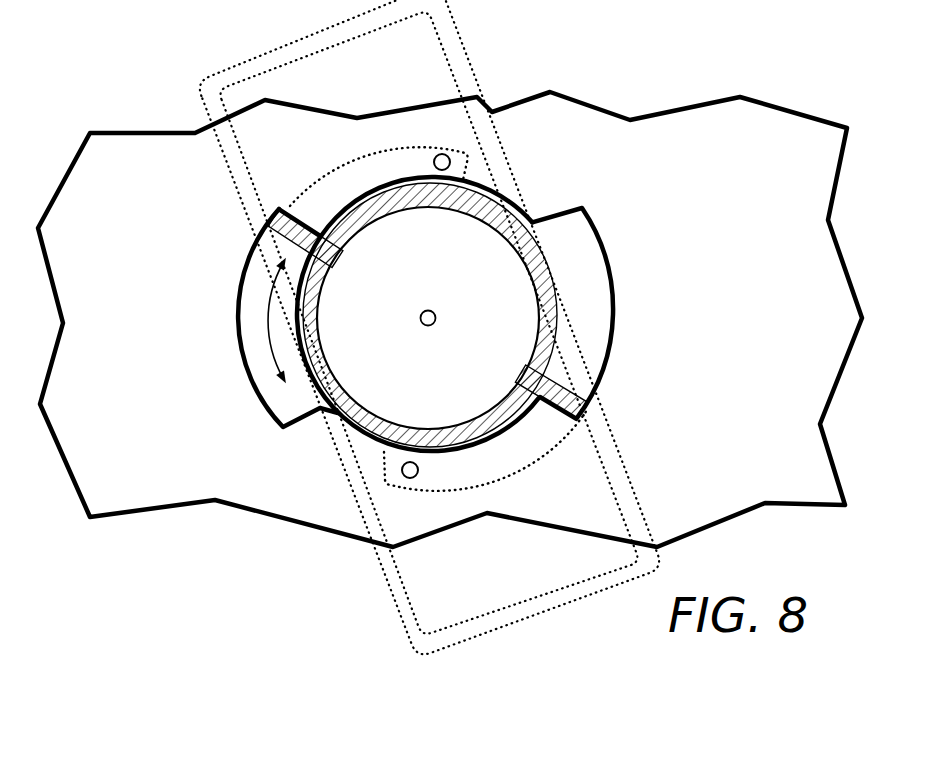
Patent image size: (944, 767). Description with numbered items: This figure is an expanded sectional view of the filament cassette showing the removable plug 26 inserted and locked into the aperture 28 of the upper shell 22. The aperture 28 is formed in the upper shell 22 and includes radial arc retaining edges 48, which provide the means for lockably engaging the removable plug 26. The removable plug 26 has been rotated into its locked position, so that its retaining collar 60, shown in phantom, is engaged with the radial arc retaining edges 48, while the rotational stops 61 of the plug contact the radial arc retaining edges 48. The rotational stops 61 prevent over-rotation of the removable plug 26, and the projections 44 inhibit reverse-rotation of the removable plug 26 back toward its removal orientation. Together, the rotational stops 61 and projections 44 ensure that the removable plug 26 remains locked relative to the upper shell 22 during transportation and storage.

The upper shell 22 is at (772, 133).
The aperture 28 is at (564, 226).
The removable plug 26 is at (310, 390).
The rotational stops 61 is at (318, 186).
The retaining collar 60 is at (342, 164).
The projections 44 is at (433, 157).
The radial arc retaining edges 48 is at (462, 467).